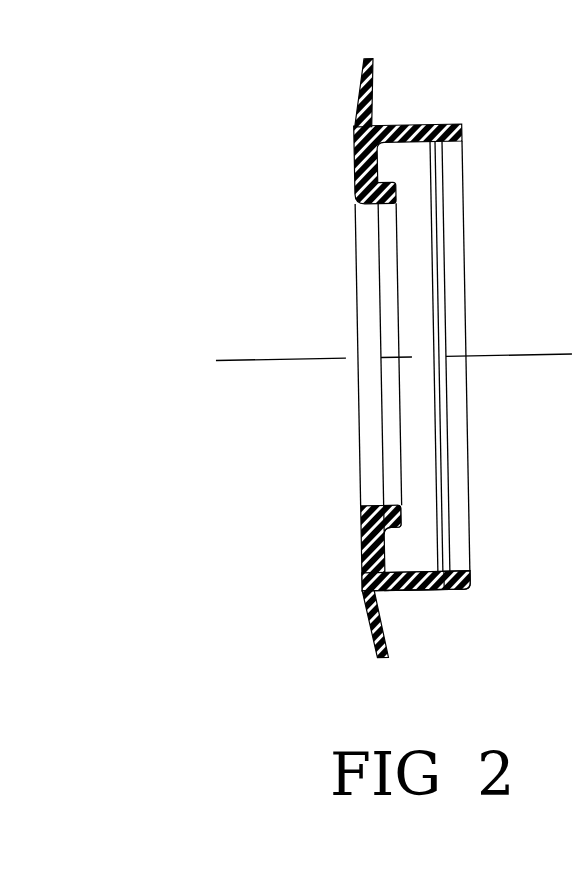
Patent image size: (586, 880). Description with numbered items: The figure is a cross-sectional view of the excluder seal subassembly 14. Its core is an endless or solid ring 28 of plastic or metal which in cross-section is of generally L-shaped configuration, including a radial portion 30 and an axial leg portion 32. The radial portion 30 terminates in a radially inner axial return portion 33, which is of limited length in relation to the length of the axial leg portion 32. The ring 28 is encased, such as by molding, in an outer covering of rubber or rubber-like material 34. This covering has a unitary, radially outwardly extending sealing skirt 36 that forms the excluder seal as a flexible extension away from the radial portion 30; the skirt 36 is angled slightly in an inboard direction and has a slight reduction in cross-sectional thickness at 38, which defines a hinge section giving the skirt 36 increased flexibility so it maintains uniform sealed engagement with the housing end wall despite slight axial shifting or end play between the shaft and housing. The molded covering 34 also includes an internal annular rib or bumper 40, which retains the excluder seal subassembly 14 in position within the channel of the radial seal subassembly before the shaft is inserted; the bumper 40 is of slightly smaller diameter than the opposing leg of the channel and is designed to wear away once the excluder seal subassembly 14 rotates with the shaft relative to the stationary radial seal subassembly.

The excluder seal subassembly 14 is at (365, 72).
The ring 28 is at (363, 535).
The radial portion 30 is at (367, 573).
The axial leg portion 32 is at (452, 583).
The radially inner axial return portion 33 is at (394, 505).
The rubber or rubber-like material 34 is at (402, 592).
The sealing skirt 36 is at (365, 72).
The hinge section 38 is at (366, 595).
The annular rib or bumper 40 is at (443, 567).